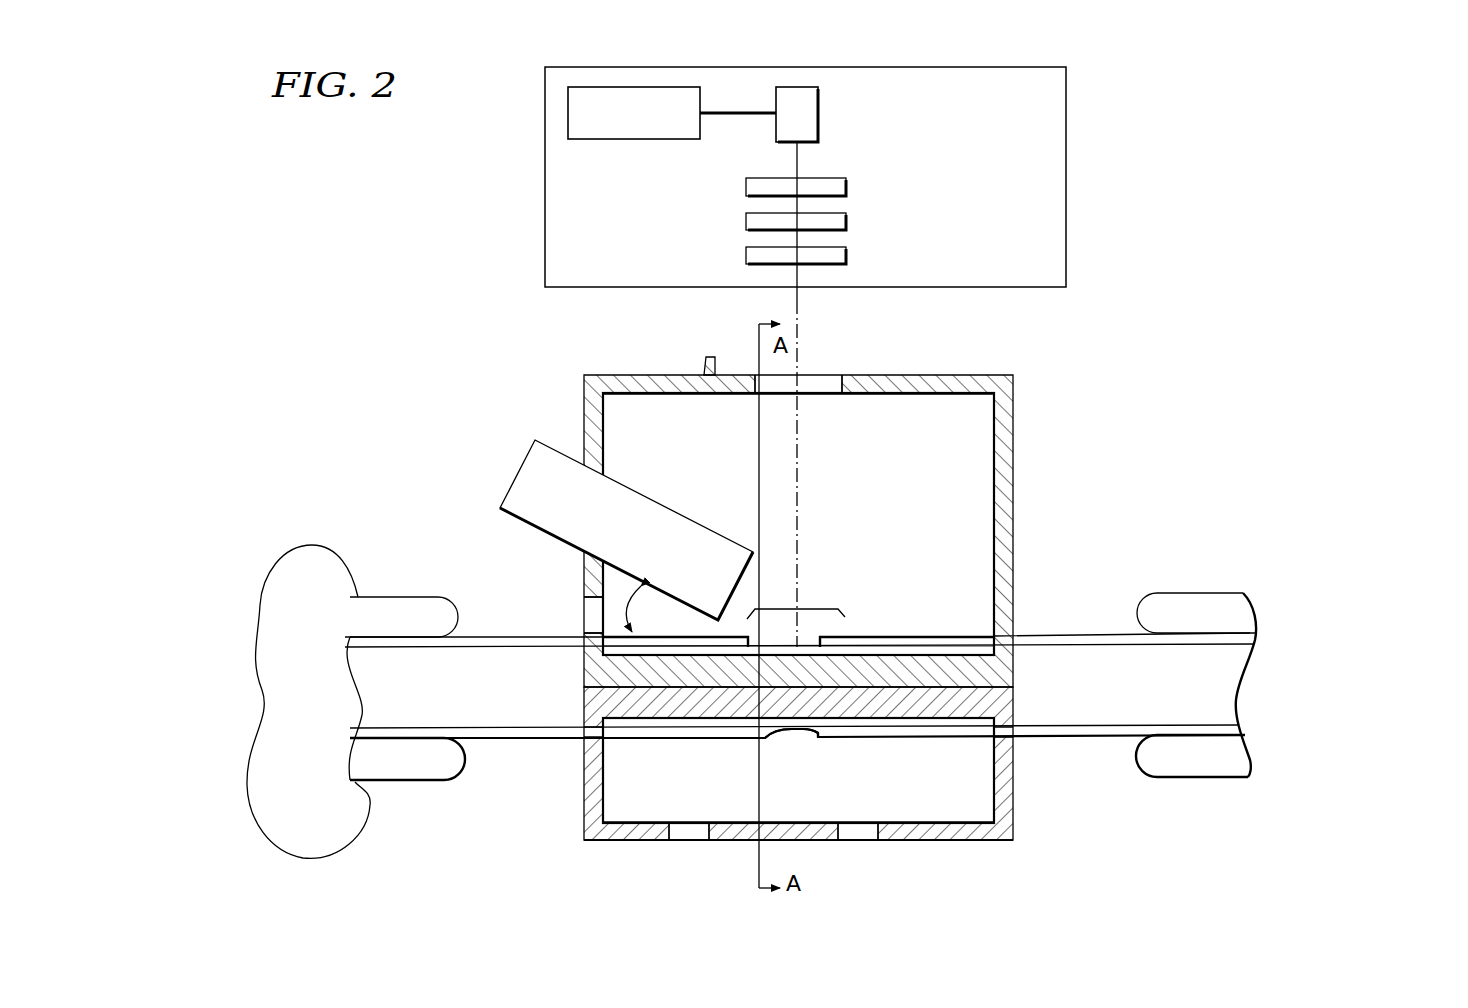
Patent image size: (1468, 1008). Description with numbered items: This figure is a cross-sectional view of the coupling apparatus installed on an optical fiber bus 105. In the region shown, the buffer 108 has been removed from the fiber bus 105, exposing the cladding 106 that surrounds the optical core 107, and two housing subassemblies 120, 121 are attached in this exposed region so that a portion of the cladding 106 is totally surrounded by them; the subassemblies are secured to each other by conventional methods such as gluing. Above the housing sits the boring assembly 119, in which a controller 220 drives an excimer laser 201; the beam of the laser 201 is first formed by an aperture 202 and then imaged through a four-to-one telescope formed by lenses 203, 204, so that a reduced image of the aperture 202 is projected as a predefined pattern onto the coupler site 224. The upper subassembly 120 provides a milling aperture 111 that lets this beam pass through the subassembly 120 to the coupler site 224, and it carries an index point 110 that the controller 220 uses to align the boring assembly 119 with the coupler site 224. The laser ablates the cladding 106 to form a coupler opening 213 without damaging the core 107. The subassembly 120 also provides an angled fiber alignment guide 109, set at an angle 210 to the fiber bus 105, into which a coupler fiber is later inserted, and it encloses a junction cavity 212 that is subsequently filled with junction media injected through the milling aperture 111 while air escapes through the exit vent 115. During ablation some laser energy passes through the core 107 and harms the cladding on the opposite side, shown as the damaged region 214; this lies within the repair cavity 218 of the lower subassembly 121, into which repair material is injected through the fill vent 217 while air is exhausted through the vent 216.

The boring assembly 119 is at (1066, 120).
The controller 220 is at (670, 140).
The excimer laser 201 is at (820, 103).
The aperture 202 is at (846, 179).
The lens 203 is at (846, 216).
The lens 204 is at (846, 250).
The housing subassembly 120 is at (1015, 468).
The junction cavity 212 is at (955, 447).
The milling aperture 111 is at (818, 378).
The index point 110 is at (708, 360).
The exit vent 115 is at (585, 617).
The housing subassembly 121 is at (1015, 790).
The repair cavity 218 is at (953, 803).
The vent 216 is at (699, 833).
The fill vent 217 is at (856, 826).
The optical fiber bus 105 is at (228, 698).
The buffer 108 is at (1244, 596).
The cladding 106 is at (1257, 630).
The optical core 107 is at (1243, 695).
The damaged region 214 is at (793, 733).
The coupler opening 213 is at (818, 642).
The coupler site 224 is at (808, 607).
The fiber alignment guide 109 is at (540, 486).
The angle 210 is at (641, 600).